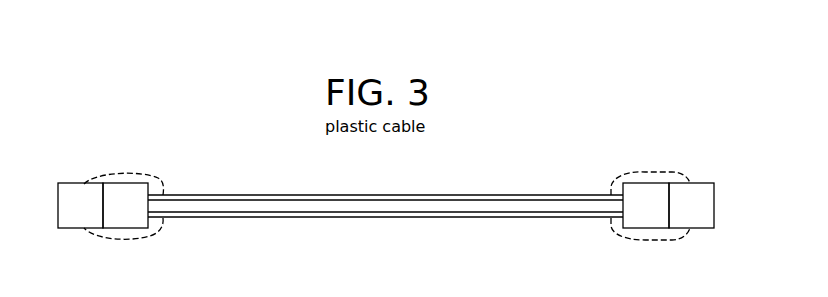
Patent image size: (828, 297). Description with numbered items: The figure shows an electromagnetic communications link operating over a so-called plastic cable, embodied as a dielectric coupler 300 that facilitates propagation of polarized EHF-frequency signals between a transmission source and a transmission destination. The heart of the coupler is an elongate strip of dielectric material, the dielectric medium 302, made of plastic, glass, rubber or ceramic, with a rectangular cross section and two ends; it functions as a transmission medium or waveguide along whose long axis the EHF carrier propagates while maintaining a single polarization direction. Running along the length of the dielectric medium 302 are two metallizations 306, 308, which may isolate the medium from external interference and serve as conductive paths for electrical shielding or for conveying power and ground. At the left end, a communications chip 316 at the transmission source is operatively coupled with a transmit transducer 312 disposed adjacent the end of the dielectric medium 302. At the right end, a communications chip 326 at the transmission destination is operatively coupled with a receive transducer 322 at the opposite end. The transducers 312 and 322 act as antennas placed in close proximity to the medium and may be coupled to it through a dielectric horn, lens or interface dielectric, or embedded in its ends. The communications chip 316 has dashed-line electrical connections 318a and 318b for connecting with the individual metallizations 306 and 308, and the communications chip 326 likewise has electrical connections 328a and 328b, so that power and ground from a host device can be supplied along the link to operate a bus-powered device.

The dielectric coupler 300 is at (385, 203).
The dielectric medium 302 is at (362, 208).
The metallization 306 is at (293, 195).
The metallization 308 is at (294, 216).
The transmit transducer 312 is at (138, 215).
The communications chip 316 is at (95, 215).
The electrical connection 318a is at (136, 176).
The electrical connection 318b is at (136, 243).
The receive transducer 322 is at (660, 215).
The communications chip 326 is at (705, 215).
The electrical connection 328a is at (640, 176).
The electrical connection 328b is at (640, 243).